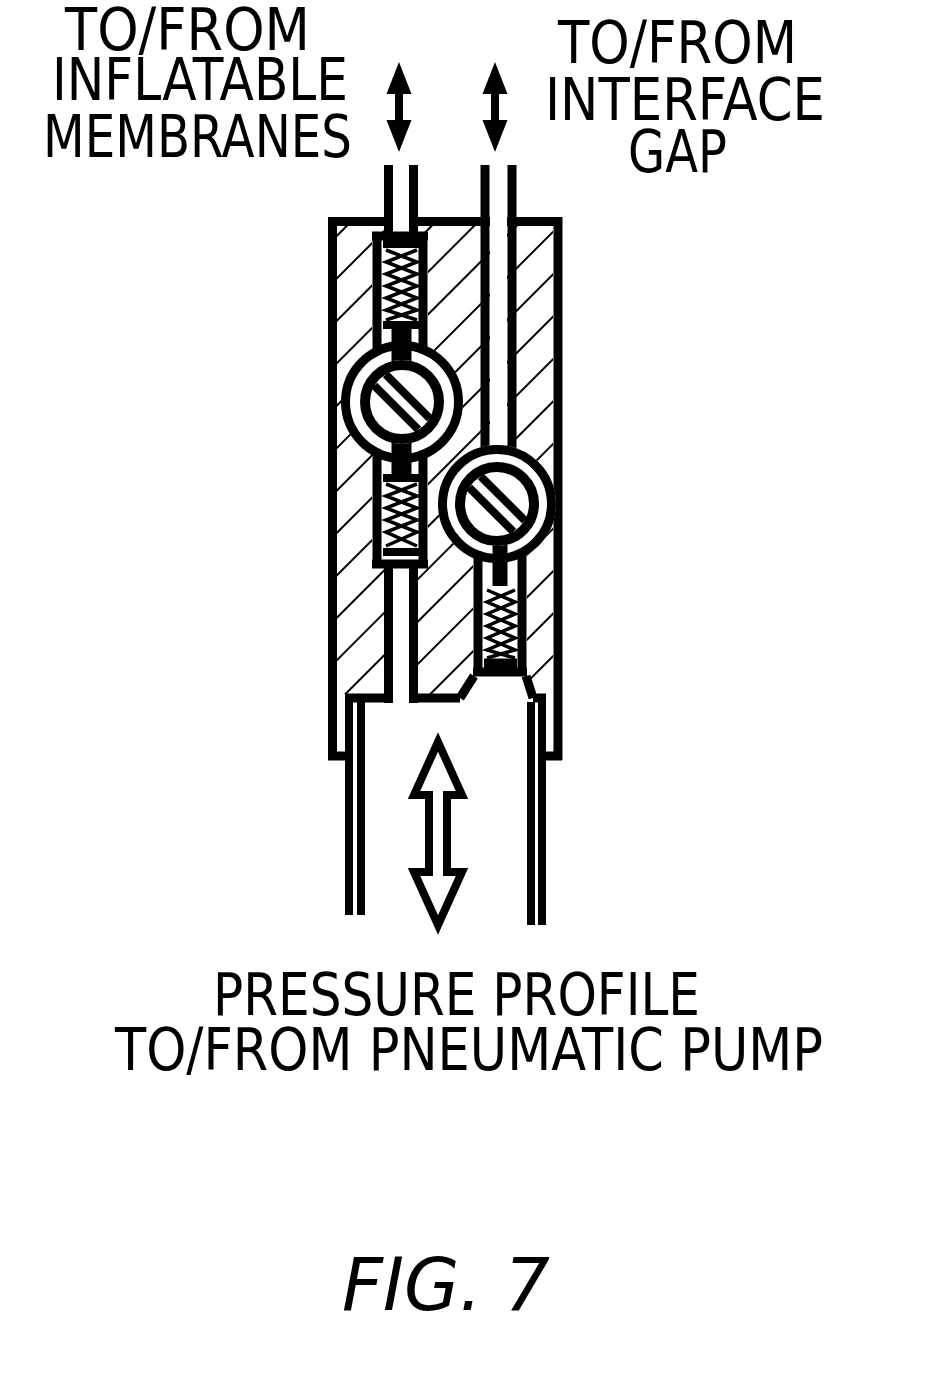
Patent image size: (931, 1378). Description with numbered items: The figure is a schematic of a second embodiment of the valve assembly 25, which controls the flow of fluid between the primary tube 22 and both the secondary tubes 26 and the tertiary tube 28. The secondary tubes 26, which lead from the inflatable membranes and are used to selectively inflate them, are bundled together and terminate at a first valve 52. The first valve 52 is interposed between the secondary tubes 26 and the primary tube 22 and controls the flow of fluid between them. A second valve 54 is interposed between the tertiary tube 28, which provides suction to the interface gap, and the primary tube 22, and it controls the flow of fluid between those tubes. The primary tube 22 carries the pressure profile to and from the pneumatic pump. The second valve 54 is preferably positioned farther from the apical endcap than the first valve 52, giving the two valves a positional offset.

The primary tube 22 is at (350, 852).
The valve assembly 25 is at (578, 400).
The secondary tube 26 is at (397, 188).
The tertiary tube 28 is at (500, 190).
The first valve 52 is at (336, 400).
The second valve 54 is at (558, 512).